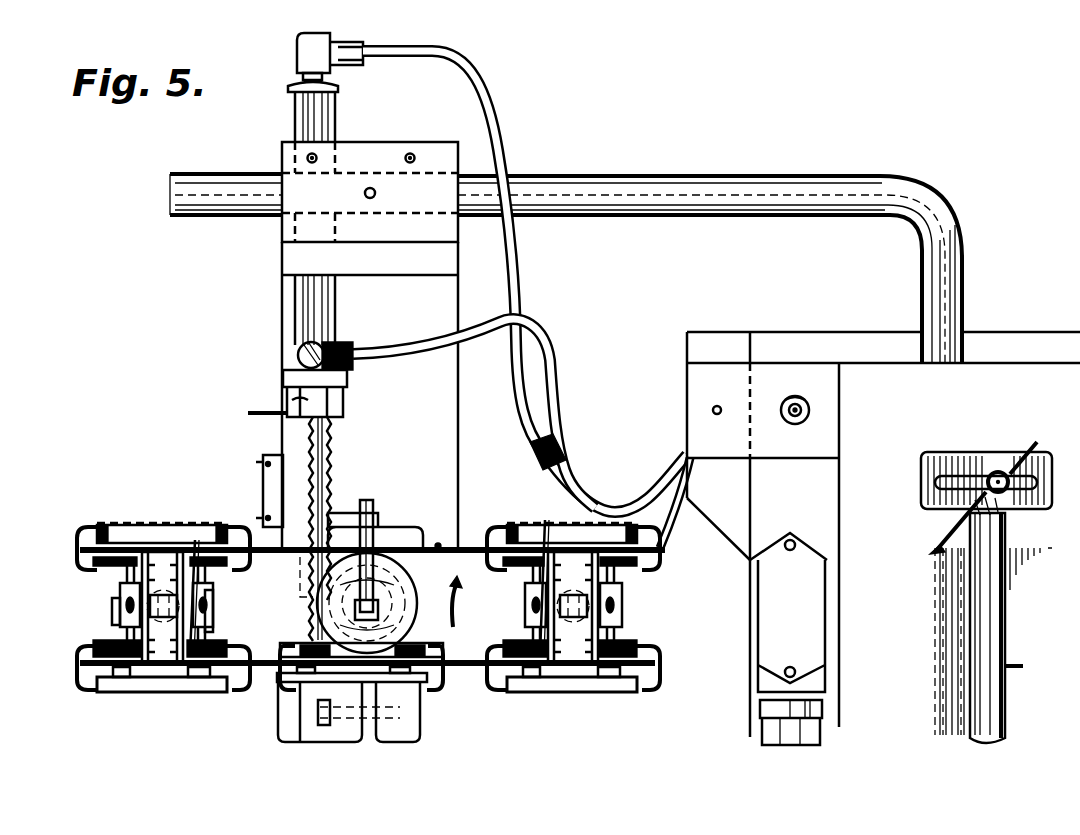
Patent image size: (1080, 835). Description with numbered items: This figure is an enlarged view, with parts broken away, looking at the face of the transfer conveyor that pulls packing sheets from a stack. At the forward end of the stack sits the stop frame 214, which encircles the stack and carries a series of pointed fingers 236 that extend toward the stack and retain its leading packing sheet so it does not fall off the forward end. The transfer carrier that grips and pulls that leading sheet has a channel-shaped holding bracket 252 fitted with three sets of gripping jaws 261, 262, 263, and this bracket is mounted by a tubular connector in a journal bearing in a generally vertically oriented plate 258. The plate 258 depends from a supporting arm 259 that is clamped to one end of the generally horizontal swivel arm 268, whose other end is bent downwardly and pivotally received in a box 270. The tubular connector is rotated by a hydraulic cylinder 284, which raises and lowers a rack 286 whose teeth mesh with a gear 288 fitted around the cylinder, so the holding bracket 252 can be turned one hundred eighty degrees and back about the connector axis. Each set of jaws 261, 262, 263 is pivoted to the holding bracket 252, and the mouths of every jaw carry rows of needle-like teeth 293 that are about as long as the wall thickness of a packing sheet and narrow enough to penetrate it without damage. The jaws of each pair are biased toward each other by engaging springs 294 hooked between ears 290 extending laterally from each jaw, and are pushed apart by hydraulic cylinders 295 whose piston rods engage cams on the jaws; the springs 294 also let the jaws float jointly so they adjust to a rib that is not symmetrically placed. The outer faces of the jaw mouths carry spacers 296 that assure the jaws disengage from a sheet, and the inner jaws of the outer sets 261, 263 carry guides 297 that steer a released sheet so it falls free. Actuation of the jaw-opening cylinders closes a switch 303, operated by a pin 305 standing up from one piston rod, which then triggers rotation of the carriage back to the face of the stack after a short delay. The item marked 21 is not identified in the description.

The workpiece rod 21 is at (940, 600).
The stop frame 214 is at (995, 458).
The fingers 236 is at (950, 530).
The holding bracket 252 is at (615, 635).
The plate 258 is at (440, 312).
The supporting arm 259 is at (440, 262).
The gripping jaws 261 is at (160, 650).
The gripping jaws 262 is at (320, 680).
The gripping jaws 263 is at (570, 655).
The swivel arm 268 is at (840, 186).
The box 270 is at (1022, 365).
The hydraulic cylinder 284 is at (300, 118).
The rack 286 is at (325, 480).
The gear 288 is at (345, 545).
The ears 290 is at (472, 548).
The needle-like teeth 293 is at (125, 640).
The engaging springs 294 is at (108, 527).
The hydraulic cylinders 295 is at (205, 588).
The spacers 296 is at (120, 610).
The guides 297 is at (195, 540).
The switch 303 is at (378, 518).
The pin 305 is at (361, 623).